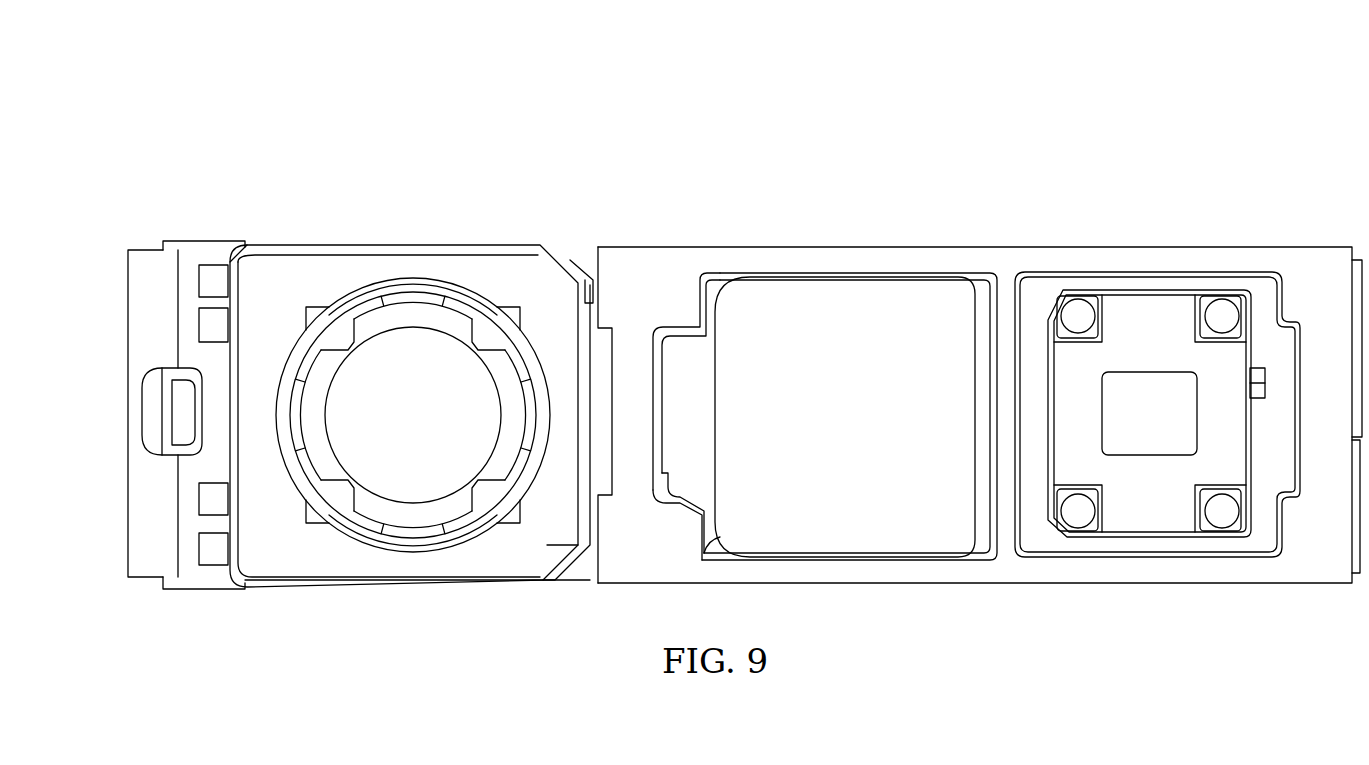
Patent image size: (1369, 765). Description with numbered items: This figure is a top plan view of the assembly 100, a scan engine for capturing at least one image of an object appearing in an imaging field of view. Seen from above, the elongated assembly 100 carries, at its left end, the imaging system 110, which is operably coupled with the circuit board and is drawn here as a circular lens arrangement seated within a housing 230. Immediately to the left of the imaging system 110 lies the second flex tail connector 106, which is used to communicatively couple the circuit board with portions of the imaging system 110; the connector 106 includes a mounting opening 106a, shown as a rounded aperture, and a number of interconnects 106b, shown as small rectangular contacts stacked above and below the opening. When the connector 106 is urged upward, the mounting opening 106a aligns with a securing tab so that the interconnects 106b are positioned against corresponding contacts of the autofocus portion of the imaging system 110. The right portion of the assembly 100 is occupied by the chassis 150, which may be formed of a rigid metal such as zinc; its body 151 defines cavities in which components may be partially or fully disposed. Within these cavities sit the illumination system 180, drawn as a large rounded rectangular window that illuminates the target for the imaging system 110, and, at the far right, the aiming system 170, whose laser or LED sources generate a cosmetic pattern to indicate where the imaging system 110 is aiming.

The assembly 100 is at (136, 101).
The second flex tail connector 106 is at (143, 522).
The mounting opening 106a is at (182, 362).
The interconnects 106b is at (220, 275).
The imaging system 110 is at (367, 224).
The lens housing 230 is at (511, 263).
The body 151 is at (680, 283).
The chassis 150 is at (916, 258).
The illumination system 180 is at (828, 300).
The aiming system 170 is at (1155, 278).